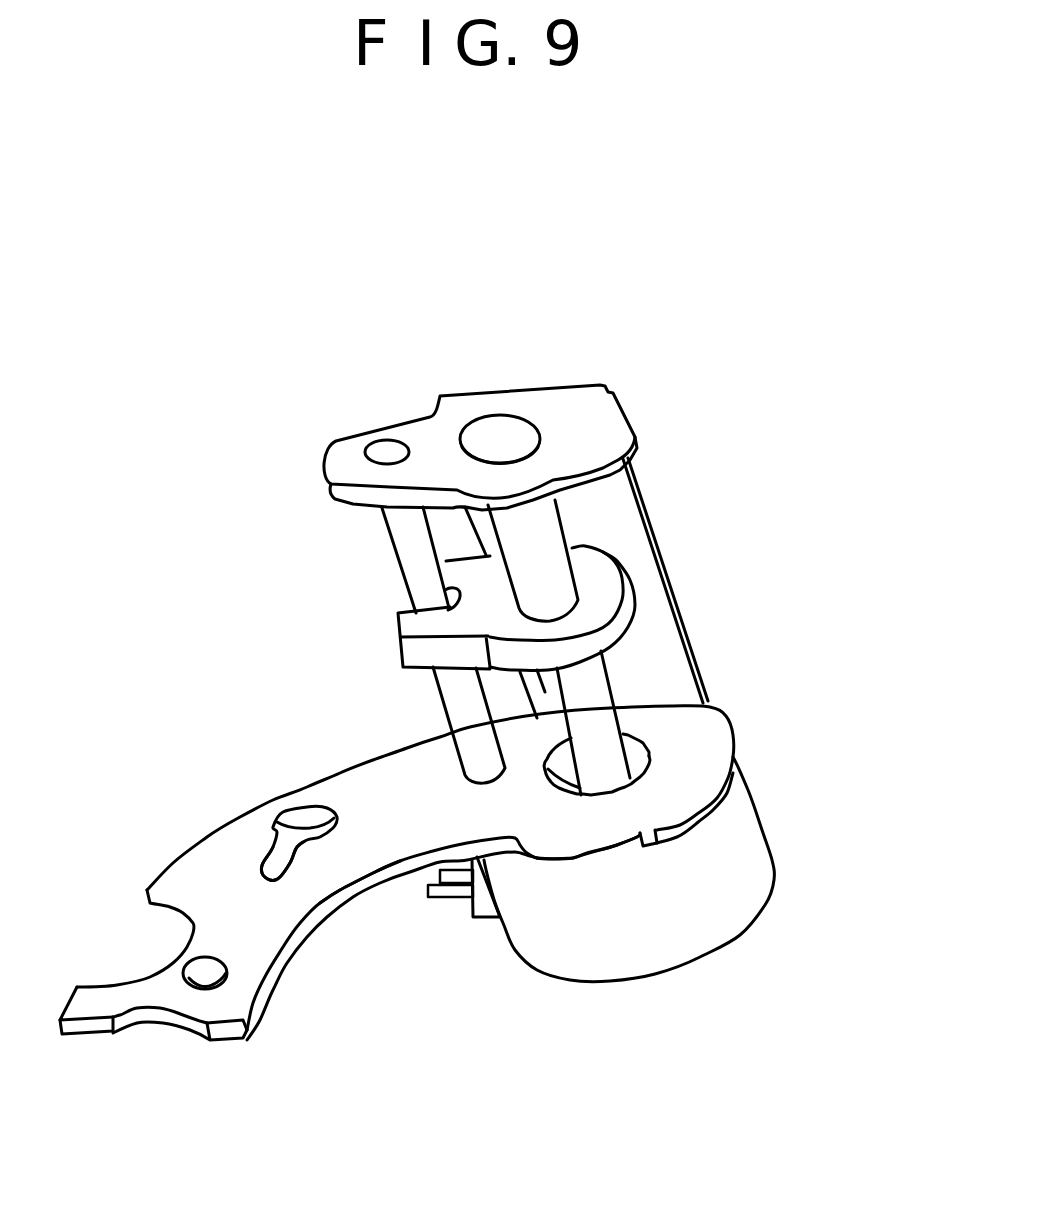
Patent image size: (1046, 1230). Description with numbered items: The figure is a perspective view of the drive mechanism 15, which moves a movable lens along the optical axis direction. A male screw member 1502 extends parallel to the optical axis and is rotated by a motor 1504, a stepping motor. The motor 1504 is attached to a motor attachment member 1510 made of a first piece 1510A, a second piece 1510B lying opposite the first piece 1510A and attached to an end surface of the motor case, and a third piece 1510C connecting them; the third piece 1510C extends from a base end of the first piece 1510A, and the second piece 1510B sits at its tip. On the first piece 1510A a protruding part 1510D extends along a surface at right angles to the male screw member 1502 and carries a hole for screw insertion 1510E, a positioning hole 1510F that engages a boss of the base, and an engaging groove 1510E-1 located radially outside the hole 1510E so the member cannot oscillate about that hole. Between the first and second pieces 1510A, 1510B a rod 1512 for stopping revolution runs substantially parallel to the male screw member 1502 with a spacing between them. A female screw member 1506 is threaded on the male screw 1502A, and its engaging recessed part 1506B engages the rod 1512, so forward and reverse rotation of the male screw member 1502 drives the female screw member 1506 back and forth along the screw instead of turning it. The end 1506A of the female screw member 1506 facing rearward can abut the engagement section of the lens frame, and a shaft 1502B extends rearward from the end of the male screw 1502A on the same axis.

The drive mechanism 15 is at (519, 302).
The motor attachment member 1510 is at (591, 382).
The first piece 1510A is at (597, 817).
The second piece 1510B is at (453, 407).
The third piece 1510C is at (689, 648).
The protruding part 1510D is at (350, 890).
The hole for screw insertion 1510E is at (296, 815).
The engaging groove 1510E-1 is at (300, 877).
The positioning hole 1510F is at (213, 963).
The rod for stopping revolution 1512 is at (386, 538).
The male screw member 1502 is at (558, 512).
The male screw 1502A is at (551, 549).
The shaft 1502B is at (597, 749).
The motor 1504 is at (763, 827).
The female screw member 1506 is at (626, 581).
The end of the female screw member 1506A is at (627, 638).
The engaging recessed part 1506B is at (400, 653).